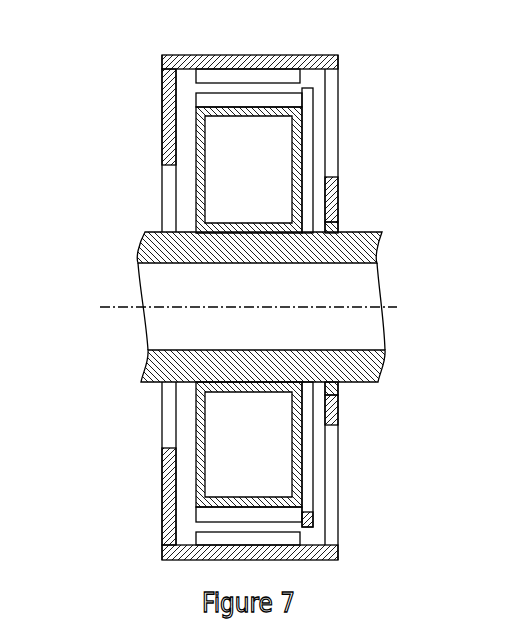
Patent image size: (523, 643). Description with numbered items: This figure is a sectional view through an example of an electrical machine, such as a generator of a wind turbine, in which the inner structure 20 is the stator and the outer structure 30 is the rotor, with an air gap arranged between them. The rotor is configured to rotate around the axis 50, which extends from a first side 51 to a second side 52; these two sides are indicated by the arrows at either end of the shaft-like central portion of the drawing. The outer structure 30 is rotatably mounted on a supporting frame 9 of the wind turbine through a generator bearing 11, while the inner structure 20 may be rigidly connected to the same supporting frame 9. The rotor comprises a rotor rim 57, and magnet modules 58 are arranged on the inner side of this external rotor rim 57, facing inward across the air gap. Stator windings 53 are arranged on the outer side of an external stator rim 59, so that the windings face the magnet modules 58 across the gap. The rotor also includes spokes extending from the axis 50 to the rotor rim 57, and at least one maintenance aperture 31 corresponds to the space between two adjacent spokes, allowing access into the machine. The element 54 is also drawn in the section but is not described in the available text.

The supporting frame 9 is at (146, 401).
The generator bearing 11 is at (339, 223).
The inner structure 20 is at (304, 450).
The outer structure 30 is at (339, 187).
The maintenance aperture 31 is at (339, 118).
The axis 50 is at (128, 310).
The first side 51 is at (412, 278).
The second side 52 is at (96, 278).
The stator windings 53 is at (207, 100).
The sensor 54 is at (306, 515).
The rotor rim 57 is at (284, 56).
The magnet modules 58 is at (226, 78).
The external stator rim 59 is at (222, 116).